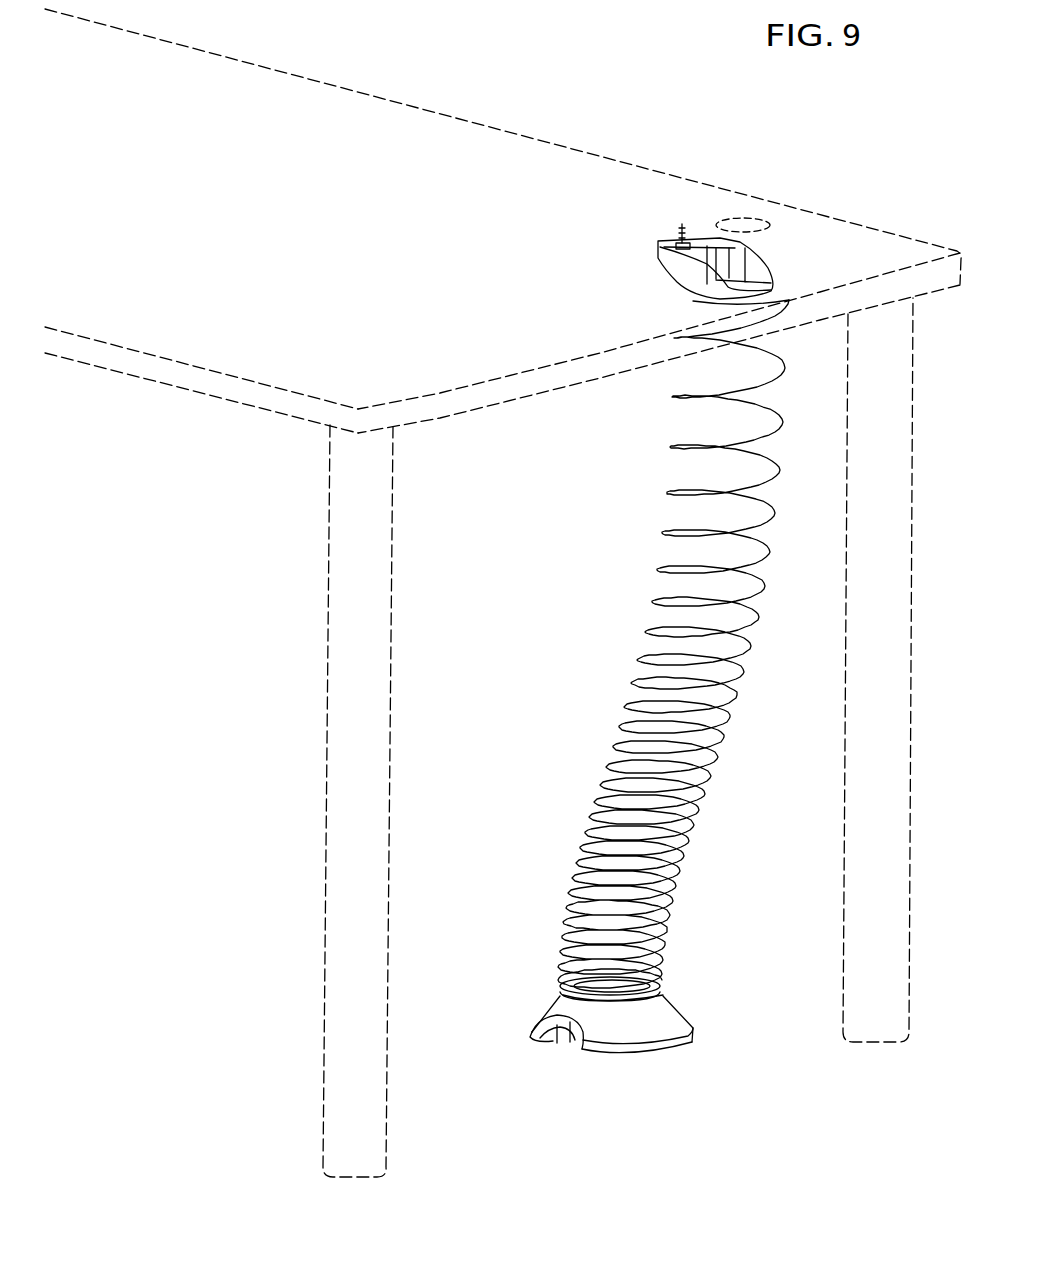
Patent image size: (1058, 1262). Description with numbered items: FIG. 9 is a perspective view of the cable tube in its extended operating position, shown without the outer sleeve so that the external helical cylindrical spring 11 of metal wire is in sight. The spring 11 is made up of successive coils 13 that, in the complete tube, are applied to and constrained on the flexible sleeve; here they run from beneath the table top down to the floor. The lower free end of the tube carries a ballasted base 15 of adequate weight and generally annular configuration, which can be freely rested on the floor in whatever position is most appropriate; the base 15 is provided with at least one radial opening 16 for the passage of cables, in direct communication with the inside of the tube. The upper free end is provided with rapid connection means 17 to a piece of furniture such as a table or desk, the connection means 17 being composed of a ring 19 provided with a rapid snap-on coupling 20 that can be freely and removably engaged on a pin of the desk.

The helical cylindrical spring 11 is at (586, 776).
The coils 13 is at (653, 605).
The ballasted base 15 is at (652, 1056).
The radial opening 16 is at (557, 1036).
The rapid connection means 17 is at (775, 286).
The ring 19 is at (703, 303).
The rapid snap-on coupling 20 is at (677, 267).